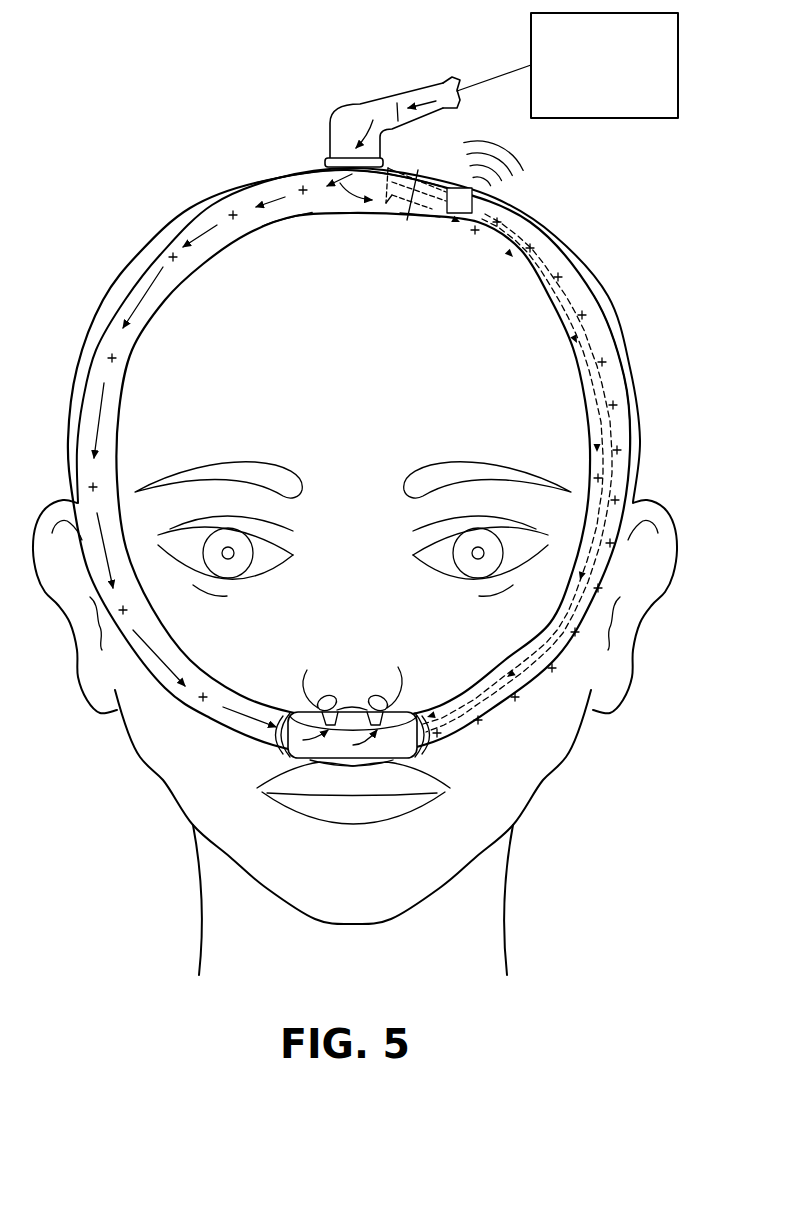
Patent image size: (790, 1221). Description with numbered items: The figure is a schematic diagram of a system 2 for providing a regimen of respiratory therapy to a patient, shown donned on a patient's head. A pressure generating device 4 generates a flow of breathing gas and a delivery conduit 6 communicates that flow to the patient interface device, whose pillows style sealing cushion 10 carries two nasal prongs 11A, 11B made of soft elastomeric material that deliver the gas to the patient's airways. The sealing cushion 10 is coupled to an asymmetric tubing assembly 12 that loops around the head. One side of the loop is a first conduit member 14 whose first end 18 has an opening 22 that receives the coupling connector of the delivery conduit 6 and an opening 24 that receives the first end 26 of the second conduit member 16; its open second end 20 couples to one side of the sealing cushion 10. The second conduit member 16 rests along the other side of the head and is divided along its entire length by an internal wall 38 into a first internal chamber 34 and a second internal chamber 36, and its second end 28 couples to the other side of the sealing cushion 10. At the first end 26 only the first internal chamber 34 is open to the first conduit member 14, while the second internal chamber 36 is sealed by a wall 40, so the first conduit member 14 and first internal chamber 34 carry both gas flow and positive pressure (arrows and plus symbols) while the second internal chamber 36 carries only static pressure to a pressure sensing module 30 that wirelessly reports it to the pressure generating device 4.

The system 2 is at (428, 91).
The pressure generating device 4 is at (680, 68).
The delivery conduit 6 is at (462, 108).
The pillows style sealing cushion 10 is at (353, 706).
The nasal prong 11A is at (312, 692).
The nasal prong 11B is at (384, 680).
The asymmetric tubing assembly 12 is at (300, 155).
The first conduit member 14 is at (112, 342).
The second conduit member 16 is at (612, 347).
The first end 18 is at (289, 224).
The second end 20 is at (282, 738).
The opening 22 is at (381, 163).
The opening 24 is at (411, 215).
The first end 26 is at (422, 208).
The second end 28 is at (430, 742).
The pressure sensing module 30 is at (473, 196).
The first internal chamber 34 is at (481, 240).
The second internal chamber 36 is at (437, 190).
The internal wall 38 is at (507, 240).
The wall 40 is at (383, 210).